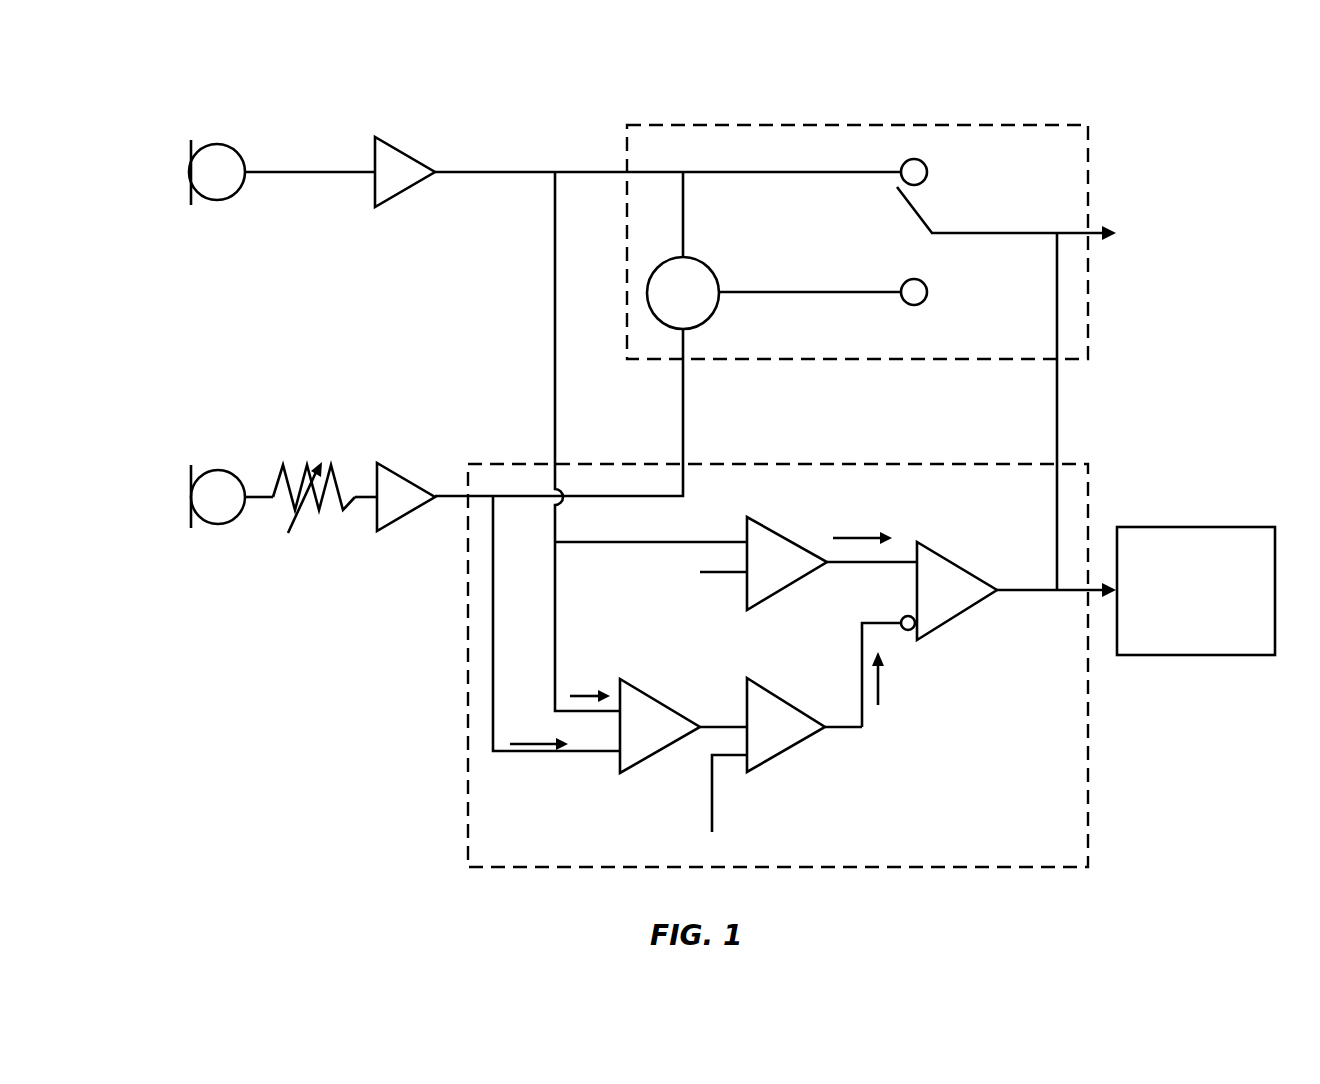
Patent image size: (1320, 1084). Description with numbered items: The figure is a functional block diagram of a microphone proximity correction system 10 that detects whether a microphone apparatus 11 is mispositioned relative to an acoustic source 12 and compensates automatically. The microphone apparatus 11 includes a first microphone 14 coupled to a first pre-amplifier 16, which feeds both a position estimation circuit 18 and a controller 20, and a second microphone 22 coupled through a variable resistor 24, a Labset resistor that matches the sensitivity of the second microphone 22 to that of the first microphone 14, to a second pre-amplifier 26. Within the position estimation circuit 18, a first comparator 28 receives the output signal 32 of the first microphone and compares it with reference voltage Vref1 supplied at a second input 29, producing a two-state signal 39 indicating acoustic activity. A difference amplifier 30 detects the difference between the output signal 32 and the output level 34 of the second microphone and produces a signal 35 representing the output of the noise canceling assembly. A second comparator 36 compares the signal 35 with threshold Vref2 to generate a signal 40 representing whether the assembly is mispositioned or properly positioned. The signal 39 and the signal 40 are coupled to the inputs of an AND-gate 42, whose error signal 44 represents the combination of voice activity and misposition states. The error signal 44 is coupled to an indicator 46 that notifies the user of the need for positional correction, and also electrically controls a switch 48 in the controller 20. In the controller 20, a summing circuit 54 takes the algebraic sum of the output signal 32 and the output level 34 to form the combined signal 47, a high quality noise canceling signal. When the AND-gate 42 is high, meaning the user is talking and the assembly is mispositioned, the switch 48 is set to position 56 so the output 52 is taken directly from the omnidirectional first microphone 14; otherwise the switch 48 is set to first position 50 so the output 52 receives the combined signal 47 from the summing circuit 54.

The microphone proximity correction system 10 is at (252, 812).
The microphone apparatus 11 is at (270, 622).
The acoustic source 12 is at (182, 342).
The first microphone 14 is at (226, 146).
The first pre-amplifier 16 is at (406, 150).
The position estimation circuit 18 is at (1030, 867).
The controller 20 is at (1022, 125).
The second microphone 22 is at (191, 497).
The variable resistor 24 is at (316, 514).
The second pre-amplifier 26 is at (407, 480).
The first comparator 28 is at (746, 536).
The second input 29 is at (698, 584).
The difference amplifier 30 is at (635, 770).
The output signal of the first microphone 32 is at (705, 172).
The output level of the second microphone 34 is at (683, 405).
The signal representing output of the NC microphone assembly 35 is at (713, 735).
The second comparator 36 is at (795, 745).
The signal having two states 39 is at (875, 535).
The signal representing misposition states 40 is at (885, 690).
The AND-gate 42 is at (955, 565).
The error signal 44 is at (1028, 598).
The indicator 46 is at (1180, 655).
The combined signal 47 is at (795, 293).
The switch 48 is at (912, 216).
The first position 50 is at (905, 302).
The output 52 is at (1180, 232).
The summing circuit 54 is at (697, 257).
The position 56 is at (904, 162).